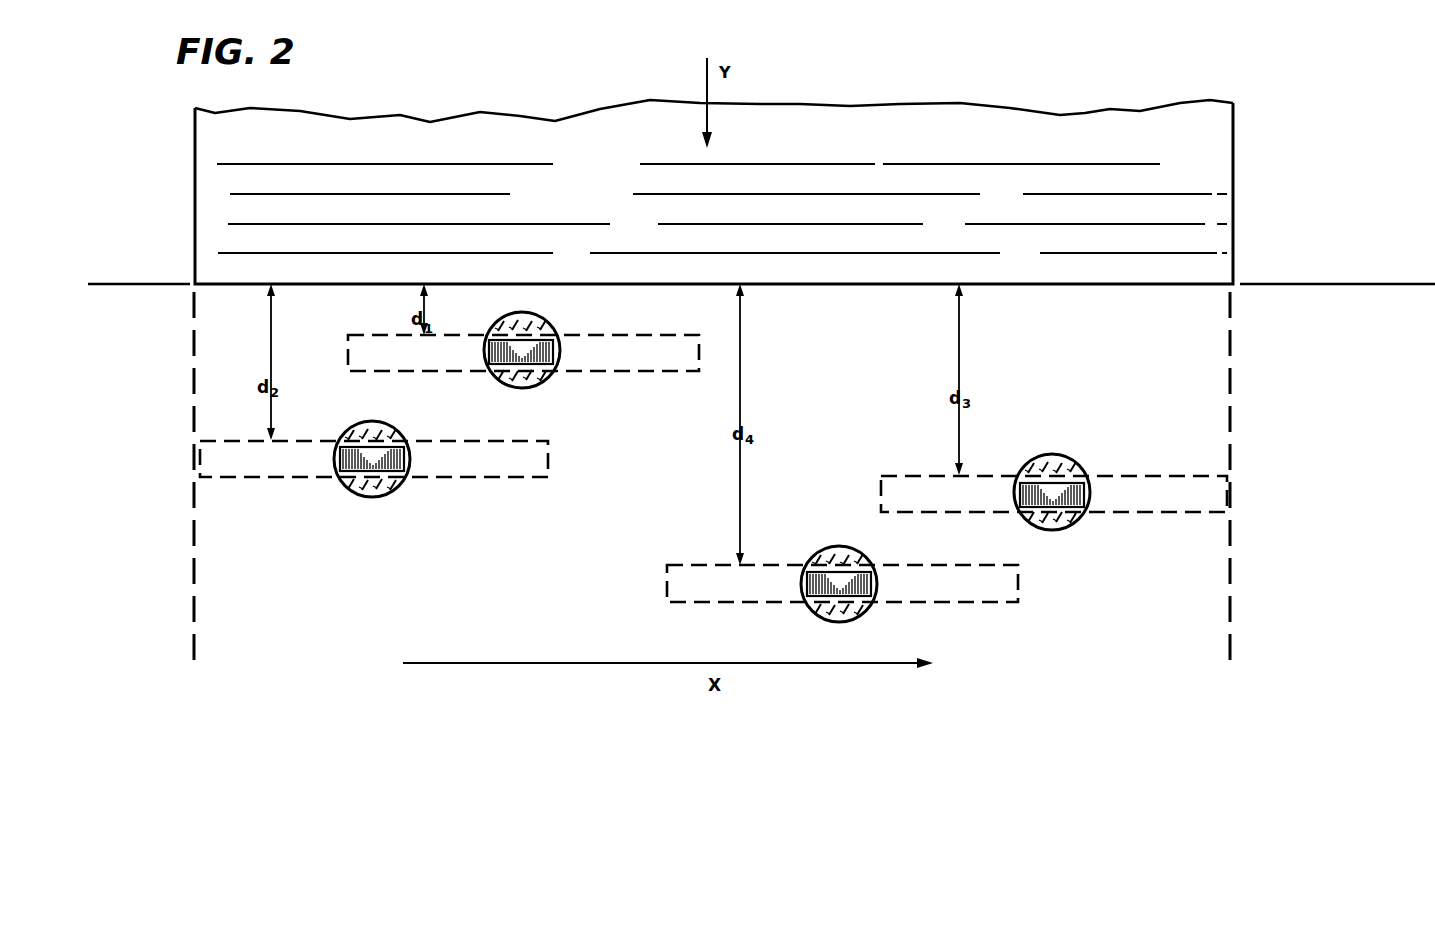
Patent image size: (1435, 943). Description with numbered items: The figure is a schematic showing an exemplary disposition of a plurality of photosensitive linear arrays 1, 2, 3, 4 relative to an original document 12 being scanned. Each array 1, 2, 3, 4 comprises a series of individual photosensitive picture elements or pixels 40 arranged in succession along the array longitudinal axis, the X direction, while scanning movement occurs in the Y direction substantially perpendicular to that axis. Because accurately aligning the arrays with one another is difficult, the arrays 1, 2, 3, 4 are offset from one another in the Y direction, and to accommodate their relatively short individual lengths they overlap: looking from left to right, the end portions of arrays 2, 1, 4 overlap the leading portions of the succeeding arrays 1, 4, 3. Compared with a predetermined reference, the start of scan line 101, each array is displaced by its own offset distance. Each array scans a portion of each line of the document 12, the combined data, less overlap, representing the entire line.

The original document 12 is at (1233, 138).
The start of scan line 101 is at (151, 282).
The photosensitive picture elements or pixels 40 is at (497, 368).
The photosensitive linear array 1 is at (535, 390).
The photosensitive linear array 2 is at (348, 480).
The photosensitive linear array 3 is at (1057, 524).
The photosensitive linear array 4 is at (853, 604).